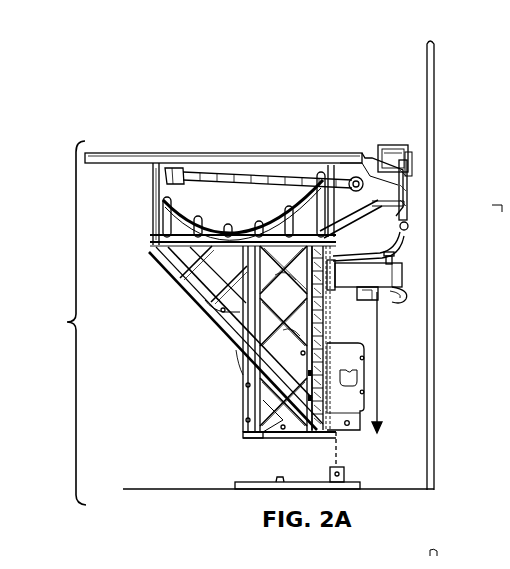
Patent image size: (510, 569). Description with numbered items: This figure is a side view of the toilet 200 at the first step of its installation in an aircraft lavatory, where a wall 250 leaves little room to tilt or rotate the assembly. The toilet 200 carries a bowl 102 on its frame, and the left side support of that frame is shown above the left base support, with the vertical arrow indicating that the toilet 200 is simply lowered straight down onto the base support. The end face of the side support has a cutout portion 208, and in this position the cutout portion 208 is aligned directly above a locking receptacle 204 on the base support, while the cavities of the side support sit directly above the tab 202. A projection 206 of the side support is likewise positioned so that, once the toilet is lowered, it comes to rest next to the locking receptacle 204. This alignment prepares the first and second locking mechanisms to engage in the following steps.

The toilet 200 is at (145, 40).
The wall 250 is at (420, 59).
The bowl 102 is at (111, 142).
The cutout portion 208 is at (270, 416).
The projection 206 is at (283, 429).
The locking receptacle 204 is at (276, 478).
The tab 202 is at (346, 473).